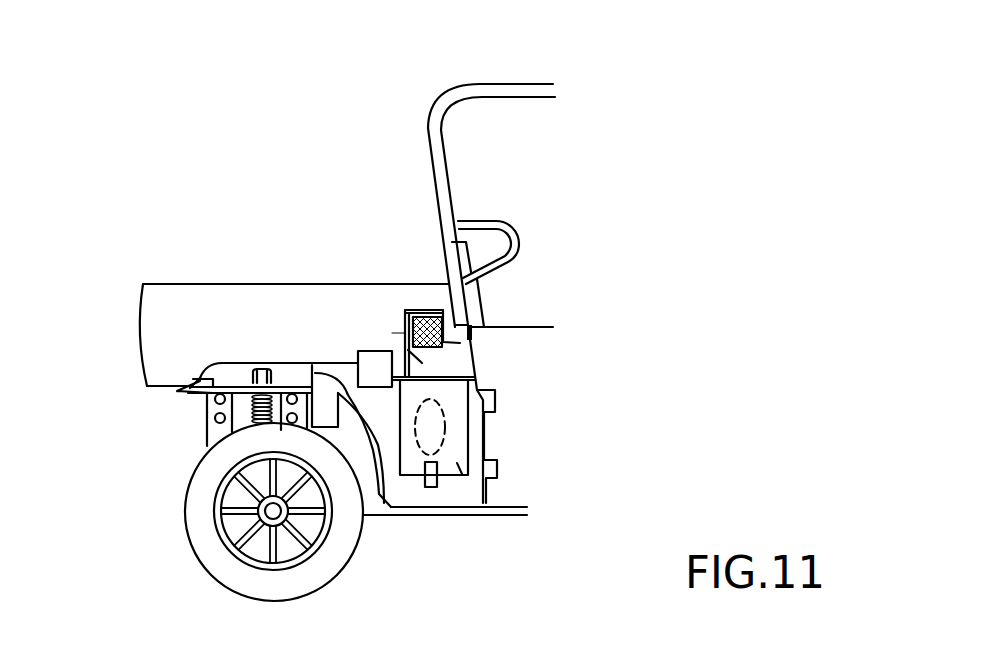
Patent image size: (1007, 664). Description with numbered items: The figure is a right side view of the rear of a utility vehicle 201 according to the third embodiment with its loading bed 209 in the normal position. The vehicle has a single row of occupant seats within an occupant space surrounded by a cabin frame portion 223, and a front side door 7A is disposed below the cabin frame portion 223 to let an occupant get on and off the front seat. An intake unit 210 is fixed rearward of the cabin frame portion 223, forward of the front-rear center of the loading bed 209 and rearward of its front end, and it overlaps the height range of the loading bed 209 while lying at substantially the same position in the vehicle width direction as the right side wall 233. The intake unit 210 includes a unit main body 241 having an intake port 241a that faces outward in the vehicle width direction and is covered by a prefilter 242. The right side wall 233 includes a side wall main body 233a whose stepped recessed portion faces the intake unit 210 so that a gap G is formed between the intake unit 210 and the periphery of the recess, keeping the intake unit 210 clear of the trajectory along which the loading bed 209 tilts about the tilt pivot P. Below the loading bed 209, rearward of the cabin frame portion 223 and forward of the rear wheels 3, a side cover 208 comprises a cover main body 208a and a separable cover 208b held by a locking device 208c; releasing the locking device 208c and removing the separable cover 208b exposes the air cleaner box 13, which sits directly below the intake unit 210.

The utility vehicle 201 is at (646, 77).
The cabin frame portion 223 is at (518, 86).
The loading bed 209 is at (141, 283).
The right side wall 233 is at (145, 320).
The side wall main body 233a is at (158, 357).
The tilt pivot P is at (178, 392).
The rear wheels 3 is at (190, 537).
The side cover 208 is at (415, 493).
The cover main body 208a is at (393, 490).
The separable cover 208b is at (457, 465).
The locking device 208c is at (432, 487).
The front side door 7A is at (527, 490).
The prefilter 242 is at (403, 318).
The intake unit 210 is at (420, 310).
The gap G is at (395, 333).
The unit main body 241 is at (457, 362).
The intake port 241a is at (441, 342).
The air cleaner box 13 is at (447, 437).